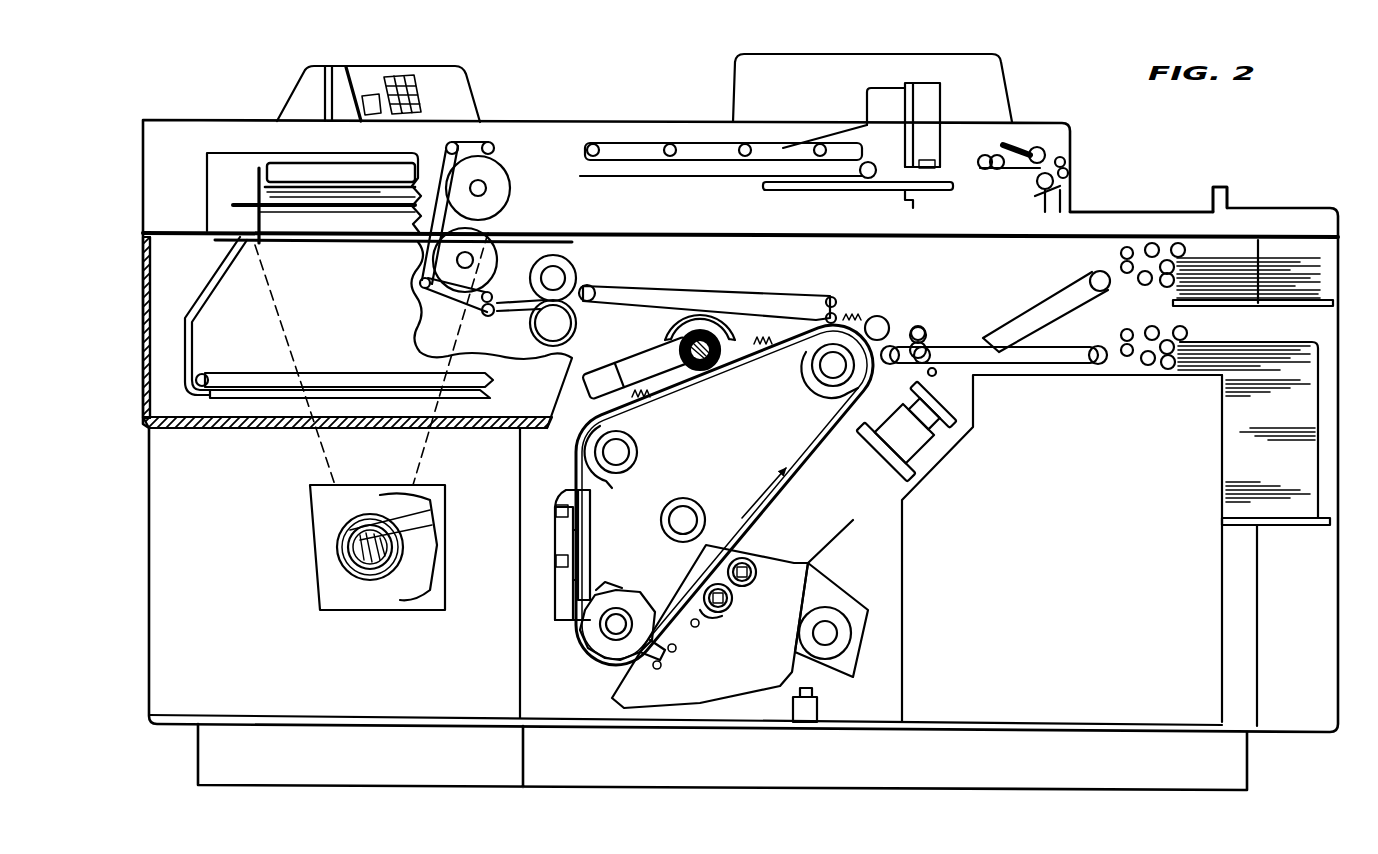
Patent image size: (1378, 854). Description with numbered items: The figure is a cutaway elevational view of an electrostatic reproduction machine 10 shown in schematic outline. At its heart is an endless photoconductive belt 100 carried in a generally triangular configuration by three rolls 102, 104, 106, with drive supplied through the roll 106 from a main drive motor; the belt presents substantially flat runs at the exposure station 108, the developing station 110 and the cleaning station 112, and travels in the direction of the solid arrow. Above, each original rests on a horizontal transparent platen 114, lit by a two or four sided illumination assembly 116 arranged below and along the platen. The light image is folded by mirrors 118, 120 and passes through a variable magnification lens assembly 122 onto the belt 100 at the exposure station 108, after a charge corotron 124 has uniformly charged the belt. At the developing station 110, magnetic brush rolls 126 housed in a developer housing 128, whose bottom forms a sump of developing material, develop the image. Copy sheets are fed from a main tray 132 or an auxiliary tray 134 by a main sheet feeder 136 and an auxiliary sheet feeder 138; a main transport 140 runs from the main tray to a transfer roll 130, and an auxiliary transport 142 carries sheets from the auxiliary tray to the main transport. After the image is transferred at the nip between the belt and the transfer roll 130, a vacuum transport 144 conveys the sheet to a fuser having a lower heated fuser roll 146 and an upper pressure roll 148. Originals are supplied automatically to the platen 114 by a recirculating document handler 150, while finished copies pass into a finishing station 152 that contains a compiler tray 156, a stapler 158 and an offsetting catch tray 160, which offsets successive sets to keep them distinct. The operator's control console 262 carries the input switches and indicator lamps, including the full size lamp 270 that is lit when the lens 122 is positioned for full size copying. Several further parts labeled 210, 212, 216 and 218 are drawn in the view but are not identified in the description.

The electrostatic reproduction machine 10 is at (1090, 118).
The photoconductive belt 100 is at (576, 656).
The roll 102 is at (600, 652).
The roll 104 is at (634, 438).
The roll 106 is at (813, 364).
The exposure station 108 is at (541, 575).
The developing station 110 is at (690, 578).
The cleaning station 112 is at (757, 422).
The transparent platen 114 is at (352, 243).
The illumination assembly 116 is at (212, 378).
The mirror 118 is at (325, 612).
The mirror 120 is at (440, 524).
The variable magnification lens assembly 122 is at (330, 598).
The charge corotron 124 is at (606, 370).
The magnetic brush rolls 126 is at (748, 598).
The developer housing 128 is at (750, 682).
The transfer roll 130 is at (882, 320).
The main tray 132 is at (1308, 343).
The auxiliary tray 134 is at (1292, 270).
The main sheet feeder 136 is at (1183, 333).
The auxiliary sheet feeder 138 is at (1197, 252).
The main transport 140 is at (1066, 343).
The auxiliary transport 142 is at (1035, 291).
The vacuum transport 144 is at (758, 287).
The lower heated fuser roll 146 is at (542, 334).
The upper pressure roll 148 is at (575, 278).
The recirculating document handler 150 is at (270, 146).
The finishing station 152 is at (997, 112).
The compiler tray 156 is at (1070, 190).
The stapler 158 is at (880, 90).
The offsetting catch tray 160 is at (1170, 207).
The document transport rollers 210 is at (498, 230).
The document feed belt 212 is at (631, 160).
The tray 216 is at (912, 204).
The roller 218 is at (1076, 206).
The operator's control console 262 is at (470, 102).
The full size lamp 270 is at (1232, 192).